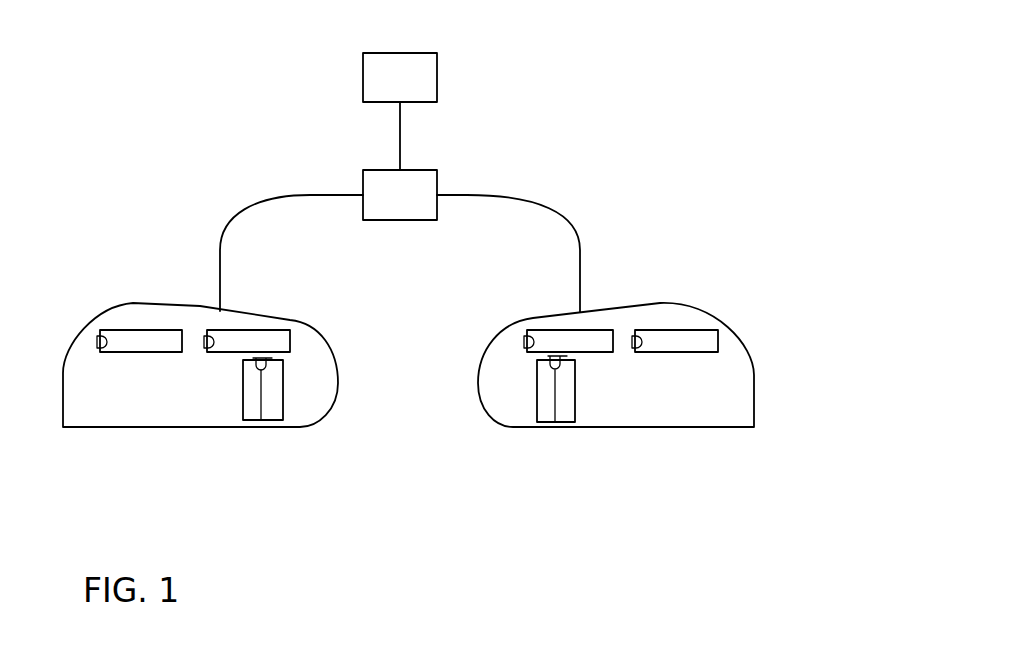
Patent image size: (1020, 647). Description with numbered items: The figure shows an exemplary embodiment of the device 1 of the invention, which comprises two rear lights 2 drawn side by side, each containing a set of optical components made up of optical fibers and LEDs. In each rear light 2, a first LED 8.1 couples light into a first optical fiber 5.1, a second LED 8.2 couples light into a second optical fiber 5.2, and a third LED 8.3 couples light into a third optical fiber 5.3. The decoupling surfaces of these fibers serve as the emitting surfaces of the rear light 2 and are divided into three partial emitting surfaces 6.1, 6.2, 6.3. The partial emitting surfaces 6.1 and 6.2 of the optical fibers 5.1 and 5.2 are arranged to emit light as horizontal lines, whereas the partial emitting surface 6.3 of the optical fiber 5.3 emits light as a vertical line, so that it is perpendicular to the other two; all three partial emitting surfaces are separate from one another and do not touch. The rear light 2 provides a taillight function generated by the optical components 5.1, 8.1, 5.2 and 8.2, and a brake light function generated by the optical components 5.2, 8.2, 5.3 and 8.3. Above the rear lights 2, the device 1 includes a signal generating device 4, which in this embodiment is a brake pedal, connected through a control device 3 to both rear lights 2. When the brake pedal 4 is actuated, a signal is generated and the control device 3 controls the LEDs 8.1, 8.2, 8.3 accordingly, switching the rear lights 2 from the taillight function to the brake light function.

The device 1 is at (588, 98).
The rear light 2 is at (483, 412).
The control device 3 is at (400, 241).
The signal generating device 4 is at (400, 111).
The optical fiber 5.1 is at (120, 330).
The optical fiber 5.2 is at (270, 330).
The optical fiber 5.3 is at (274, 422).
The partial emitting surface 6.1 is at (409, 343).
The partial emitting surface 6.2 is at (410, 343).
The partial emitting surface 6.3 is at (258, 402).
The LED 8.1 is at (95, 335).
The LED 8.2 is at (205, 332).
The LED 8.3 is at (253, 358).